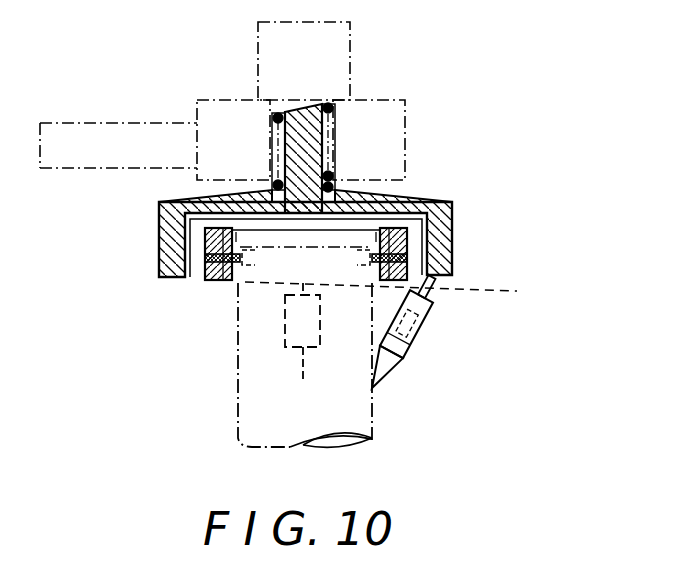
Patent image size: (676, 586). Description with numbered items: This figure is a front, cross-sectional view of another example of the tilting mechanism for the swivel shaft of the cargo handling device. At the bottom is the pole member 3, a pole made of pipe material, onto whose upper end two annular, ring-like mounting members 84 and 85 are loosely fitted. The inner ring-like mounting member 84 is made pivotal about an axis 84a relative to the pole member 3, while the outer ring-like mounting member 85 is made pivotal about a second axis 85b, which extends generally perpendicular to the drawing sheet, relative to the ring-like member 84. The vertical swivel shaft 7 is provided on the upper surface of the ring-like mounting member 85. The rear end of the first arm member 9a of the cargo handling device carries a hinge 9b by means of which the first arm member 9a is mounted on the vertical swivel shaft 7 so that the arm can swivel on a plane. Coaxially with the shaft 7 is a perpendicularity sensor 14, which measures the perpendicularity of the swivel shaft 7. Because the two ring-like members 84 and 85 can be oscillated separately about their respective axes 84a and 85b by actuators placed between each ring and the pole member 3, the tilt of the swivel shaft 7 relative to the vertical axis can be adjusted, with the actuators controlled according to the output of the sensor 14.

The perpendicularity sensor 14 is at (335, 42).
The first arm member 9a is at (123, 133).
The hinge 9b is at (405, 143).
The swivel shaft 7 is at (312, 147).
The ring-like mounting member 85 is at (442, 223).
The ring-like mounting member 84 is at (407, 240).
The axis 84a is at (233, 283).
The axis 85b is at (415, 295).
The pole member 3 is at (367, 420).